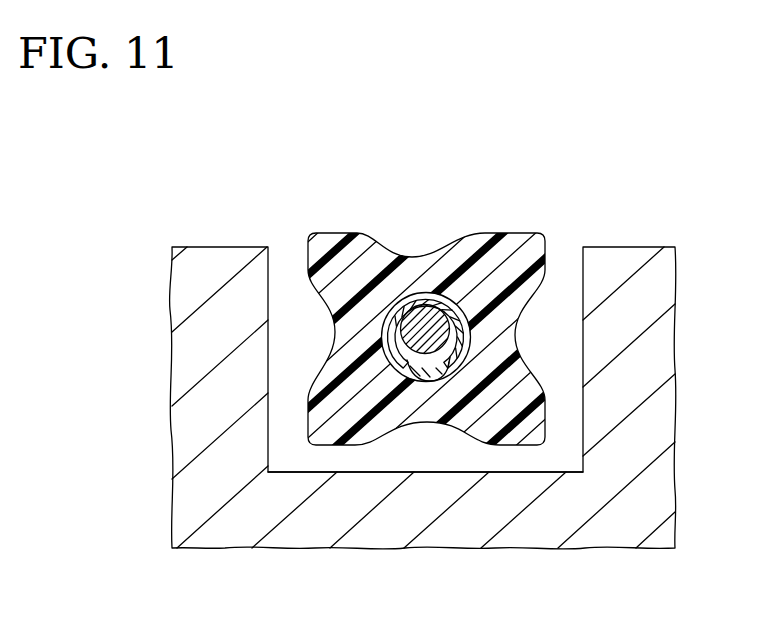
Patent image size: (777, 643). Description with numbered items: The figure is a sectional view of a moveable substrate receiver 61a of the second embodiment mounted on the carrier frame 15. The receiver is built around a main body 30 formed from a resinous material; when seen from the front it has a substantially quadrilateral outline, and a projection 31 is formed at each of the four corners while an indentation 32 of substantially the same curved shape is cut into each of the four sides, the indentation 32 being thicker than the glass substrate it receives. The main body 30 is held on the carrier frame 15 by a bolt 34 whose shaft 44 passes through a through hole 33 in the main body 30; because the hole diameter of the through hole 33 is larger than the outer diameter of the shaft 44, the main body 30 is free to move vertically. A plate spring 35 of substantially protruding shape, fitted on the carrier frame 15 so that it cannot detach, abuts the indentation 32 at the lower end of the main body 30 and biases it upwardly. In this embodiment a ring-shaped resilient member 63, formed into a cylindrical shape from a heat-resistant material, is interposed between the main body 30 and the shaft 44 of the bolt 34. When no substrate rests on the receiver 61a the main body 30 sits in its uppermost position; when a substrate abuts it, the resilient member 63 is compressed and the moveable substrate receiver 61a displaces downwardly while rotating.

The carrier frame 15 is at (658, 388).
The main body 30 is at (312, 275).
The projection 31 is at (316, 238).
The indentation 32 is at (405, 257).
The through hole 33 is at (412, 376).
The bolt 34 is at (381, 333).
The plate spring 35 is at (310, 472).
The shaft 44 is at (248, 350).
The moveable substrate receiver 61a is at (513, 233).
The resilient member 63 is at (396, 373).